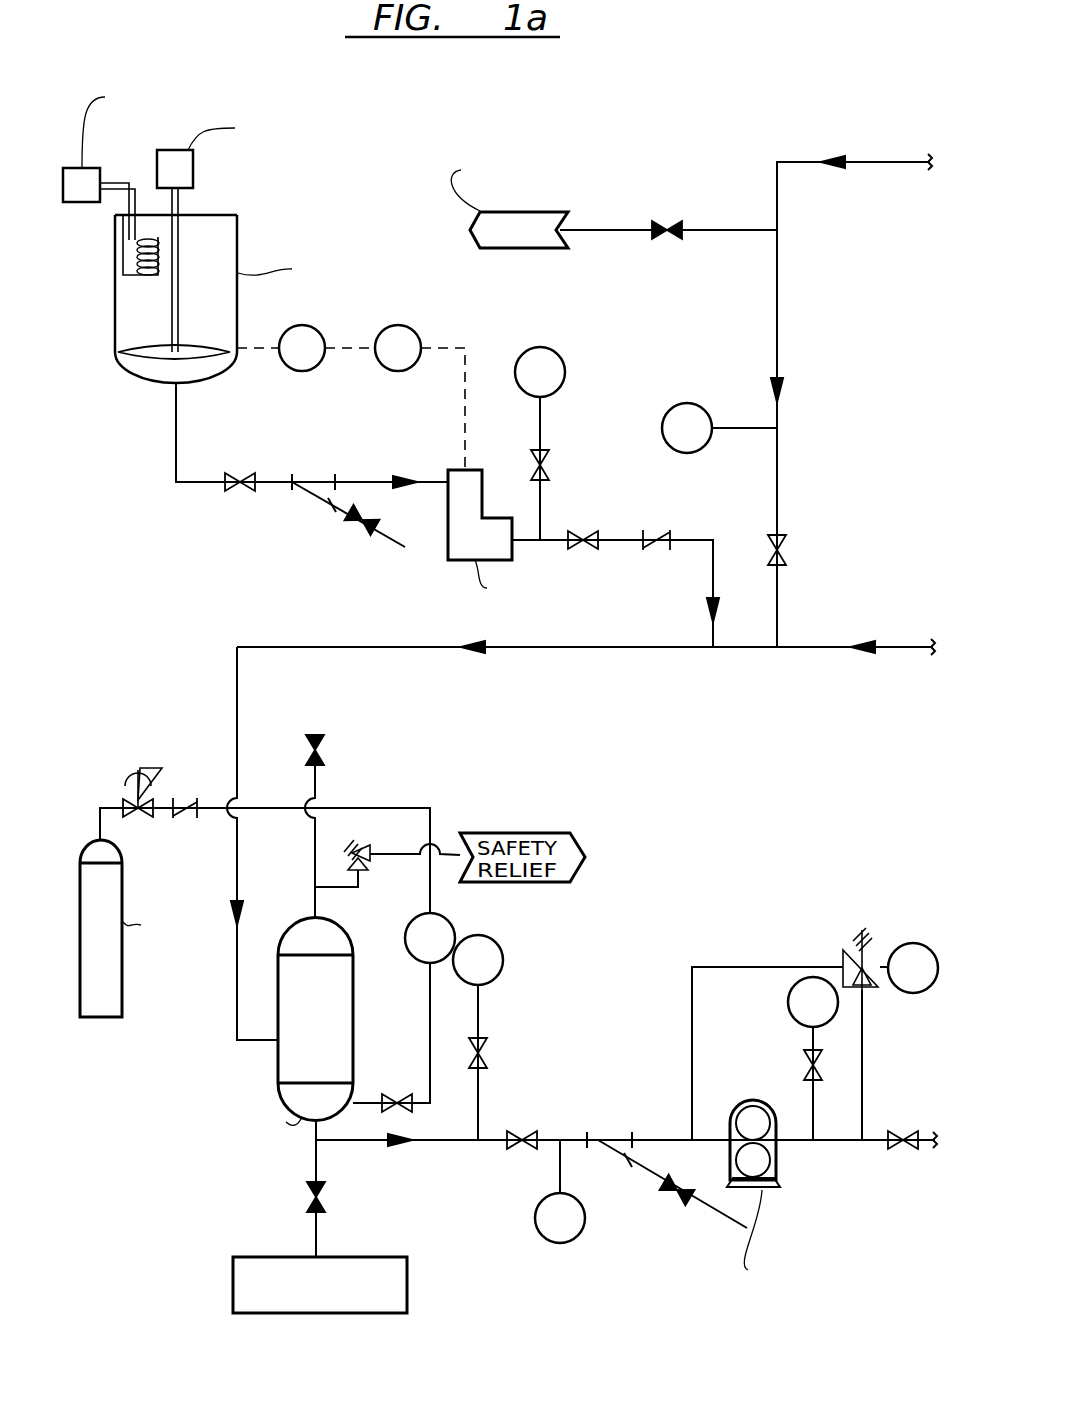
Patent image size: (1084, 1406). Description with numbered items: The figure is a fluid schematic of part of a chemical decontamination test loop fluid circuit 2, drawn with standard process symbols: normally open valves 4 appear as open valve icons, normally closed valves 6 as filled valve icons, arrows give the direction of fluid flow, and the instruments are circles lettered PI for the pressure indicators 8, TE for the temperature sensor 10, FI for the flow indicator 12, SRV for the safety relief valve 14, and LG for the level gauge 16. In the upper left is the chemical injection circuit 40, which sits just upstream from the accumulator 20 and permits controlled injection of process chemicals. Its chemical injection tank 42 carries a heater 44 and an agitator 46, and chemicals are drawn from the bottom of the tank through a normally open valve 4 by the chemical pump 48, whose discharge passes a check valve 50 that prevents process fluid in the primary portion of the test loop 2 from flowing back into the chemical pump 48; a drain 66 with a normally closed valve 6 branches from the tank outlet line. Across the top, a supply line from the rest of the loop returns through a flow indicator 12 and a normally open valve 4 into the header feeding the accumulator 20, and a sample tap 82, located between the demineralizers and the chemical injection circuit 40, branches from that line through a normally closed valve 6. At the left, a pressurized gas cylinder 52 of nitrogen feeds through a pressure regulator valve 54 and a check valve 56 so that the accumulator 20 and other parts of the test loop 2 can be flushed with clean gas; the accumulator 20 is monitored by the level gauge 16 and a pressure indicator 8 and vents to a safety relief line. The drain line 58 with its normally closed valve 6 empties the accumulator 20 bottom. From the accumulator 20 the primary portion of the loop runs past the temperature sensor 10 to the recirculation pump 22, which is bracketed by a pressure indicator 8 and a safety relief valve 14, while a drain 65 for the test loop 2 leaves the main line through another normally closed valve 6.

The chemical decontamination test loop fluid circuit 2 is at (728, 782).
The normally open valve 4 is at (240, 472).
The normally closed valve 6 is at (667, 240).
The pressure indicator 8 is at (563, 372).
The temperature sensor 10 is at (545, 1238).
The flow indicator 12 is at (690, 403).
The safety relief valve 14 is at (843, 963).
The level gauge 16 is at (447, 923).
The accumulator 20 is at (316, 1128).
The recirculation pump 22 is at (750, 1100).
The chemical injection circuit 40 is at (355, 207).
The chemical injection tank 42 is at (117, 355).
The heater 44 is at (92, 168).
The agitator 46 is at (193, 172).
The chemical pump 48 is at (448, 476).
The check valve 50 is at (652, 530).
The pressurized gas cylinder 52 is at (123, 977).
The pressure regulator valve 54 is at (140, 765).
The check valve 56 is at (185, 798).
The drain line 58 is at (316, 1228).
The drain 65 is at (653, 1178).
The drain 66 is at (330, 508).
The sample tap 82 is at (545, 249).